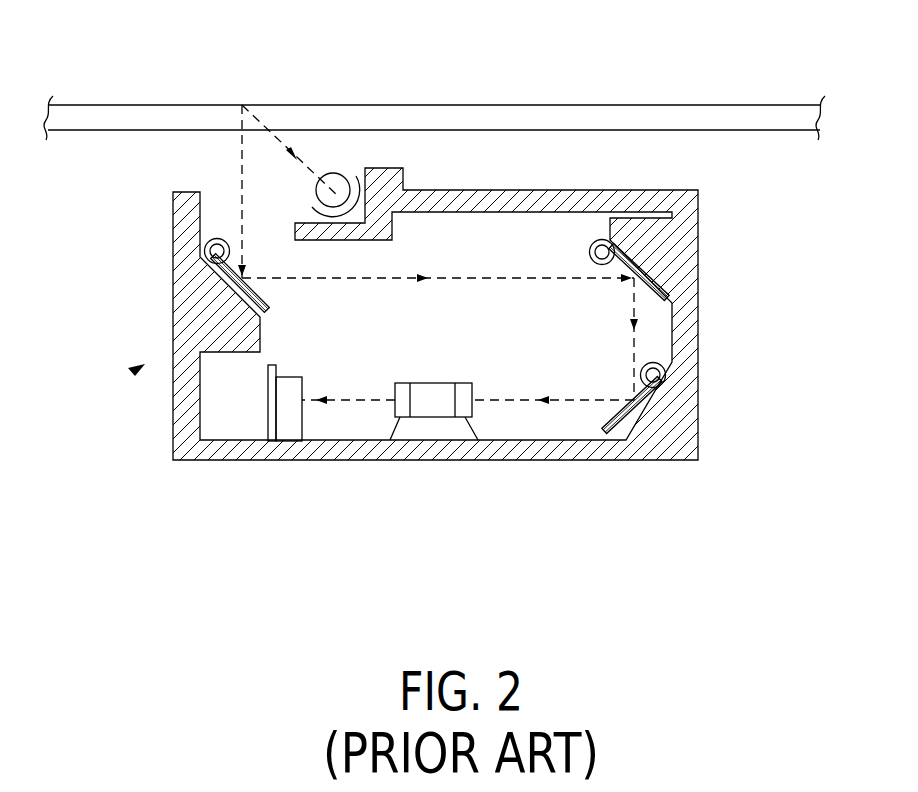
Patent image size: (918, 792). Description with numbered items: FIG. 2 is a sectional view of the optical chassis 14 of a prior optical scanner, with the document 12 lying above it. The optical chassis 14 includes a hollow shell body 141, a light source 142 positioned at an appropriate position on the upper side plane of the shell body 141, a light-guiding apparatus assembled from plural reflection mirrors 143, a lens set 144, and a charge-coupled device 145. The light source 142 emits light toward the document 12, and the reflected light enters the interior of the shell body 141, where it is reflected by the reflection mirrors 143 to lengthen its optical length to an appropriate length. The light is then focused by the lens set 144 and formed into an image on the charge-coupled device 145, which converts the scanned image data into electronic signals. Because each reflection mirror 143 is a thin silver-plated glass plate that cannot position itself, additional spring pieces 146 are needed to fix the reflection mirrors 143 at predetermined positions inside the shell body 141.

The document 12 is at (473, 113).
The optical chassis 14 is at (459, 285).
The hollow shell body 141 is at (178, 427).
The light source 142 is at (338, 173).
The reflection mirror 143 is at (214, 270).
The lens set 144 is at (425, 408).
The charge-coupled device 145 is at (291, 425).
The spring piece 146 is at (221, 238).